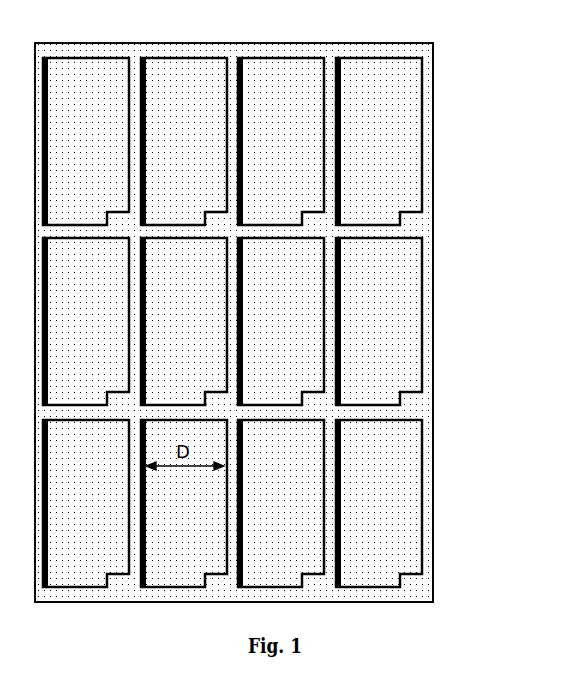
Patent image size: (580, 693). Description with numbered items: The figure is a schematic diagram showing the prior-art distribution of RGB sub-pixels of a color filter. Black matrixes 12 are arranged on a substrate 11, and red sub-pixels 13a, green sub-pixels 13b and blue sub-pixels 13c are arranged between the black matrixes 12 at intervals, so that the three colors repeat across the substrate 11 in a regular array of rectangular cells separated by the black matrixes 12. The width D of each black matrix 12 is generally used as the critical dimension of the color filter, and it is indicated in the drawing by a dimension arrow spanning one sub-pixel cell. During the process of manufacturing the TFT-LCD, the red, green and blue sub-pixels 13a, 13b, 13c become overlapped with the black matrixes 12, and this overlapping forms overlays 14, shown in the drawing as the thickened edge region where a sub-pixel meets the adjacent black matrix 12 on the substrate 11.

The substrate 11 is at (435, 100).
The black matrix 12 is at (331, 63).
The red sub-pixel 13a is at (87, 72).
The green sub-pixel 13b is at (183, 72).
The blue sub-pixel 13c is at (267, 72).
The overlay 14 is at (342, 202).